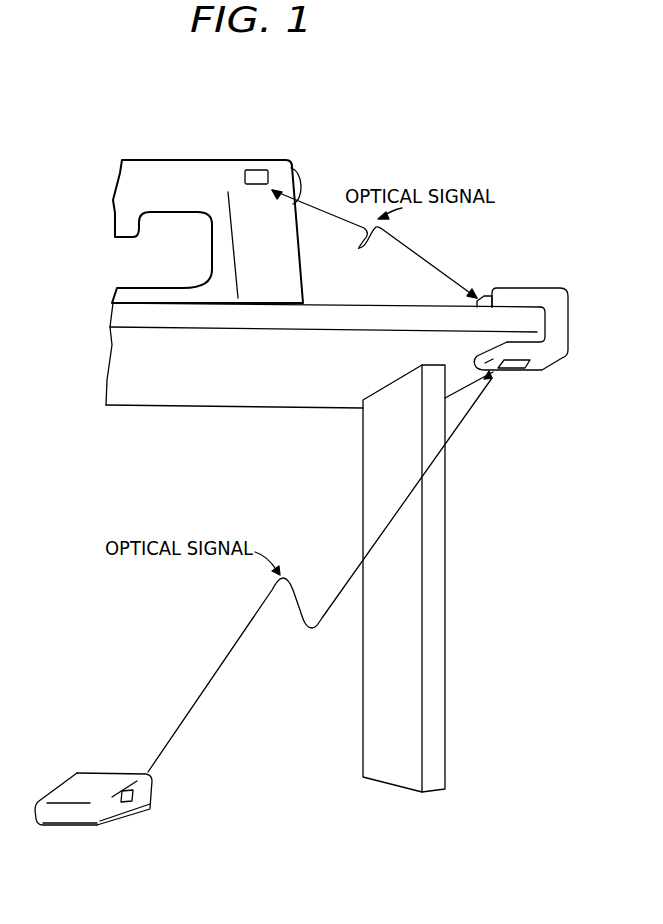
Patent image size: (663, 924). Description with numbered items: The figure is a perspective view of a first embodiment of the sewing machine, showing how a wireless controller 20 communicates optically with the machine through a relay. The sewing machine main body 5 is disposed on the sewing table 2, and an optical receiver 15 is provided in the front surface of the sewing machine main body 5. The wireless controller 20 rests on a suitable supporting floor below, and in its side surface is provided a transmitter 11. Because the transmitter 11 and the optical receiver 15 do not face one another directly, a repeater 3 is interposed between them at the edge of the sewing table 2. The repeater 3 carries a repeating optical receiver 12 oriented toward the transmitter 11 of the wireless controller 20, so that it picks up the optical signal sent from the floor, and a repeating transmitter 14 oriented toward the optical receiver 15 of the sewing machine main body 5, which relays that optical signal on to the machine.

The sewing table 2 is at (138, 320).
The repeater 3 is at (571, 328).
The sewing machine main body 5 is at (177, 160).
The transmitter 11 is at (135, 800).
The repeating optical receiver 12 is at (524, 369).
The repeating transmitter 14 is at (482, 296).
The optical receiver 15 is at (263, 175).
The wireless controller 20 is at (84, 826).